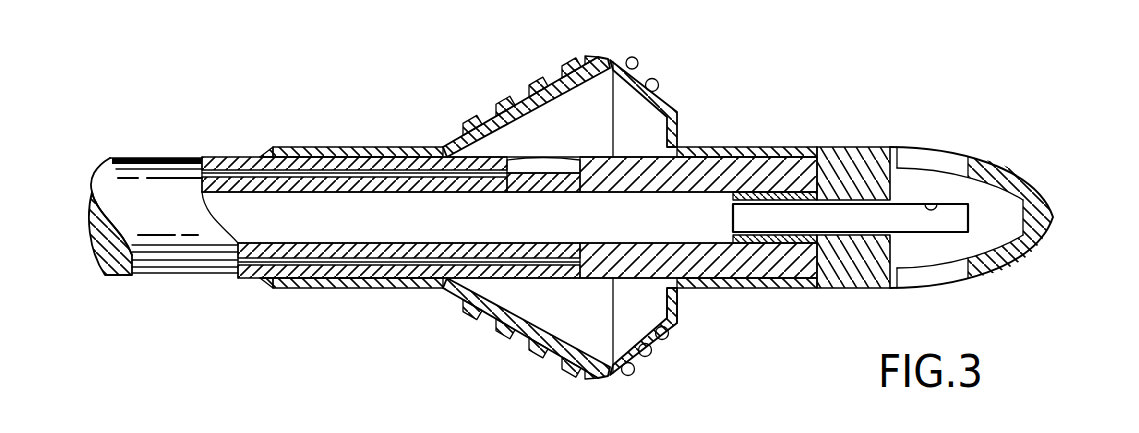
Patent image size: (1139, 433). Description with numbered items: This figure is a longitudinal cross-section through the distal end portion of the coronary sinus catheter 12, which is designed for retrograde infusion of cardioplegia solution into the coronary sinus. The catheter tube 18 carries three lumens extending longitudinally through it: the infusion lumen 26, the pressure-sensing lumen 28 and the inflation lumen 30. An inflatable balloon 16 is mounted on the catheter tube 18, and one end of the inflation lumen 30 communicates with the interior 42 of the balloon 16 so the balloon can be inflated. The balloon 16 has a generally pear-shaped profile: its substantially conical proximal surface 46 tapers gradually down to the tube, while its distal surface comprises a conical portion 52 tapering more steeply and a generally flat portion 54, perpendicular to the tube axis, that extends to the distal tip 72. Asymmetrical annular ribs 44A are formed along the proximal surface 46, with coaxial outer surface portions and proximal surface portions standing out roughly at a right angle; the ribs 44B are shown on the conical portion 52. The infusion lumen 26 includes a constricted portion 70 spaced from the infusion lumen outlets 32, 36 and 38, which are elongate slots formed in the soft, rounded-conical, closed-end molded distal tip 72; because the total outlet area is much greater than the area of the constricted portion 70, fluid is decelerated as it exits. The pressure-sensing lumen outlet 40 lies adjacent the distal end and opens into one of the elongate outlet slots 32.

The coronary sinus catheter 12 is at (729, 86).
The inflatable balloon 16 is at (646, 61).
The catheter tube 18 is at (318, 288).
The infusion lumen 26 is at (297, 192).
The pressure-sensing lumen 28 is at (388, 272).
The inflation lumen 30 is at (373, 192).
The infusion lumen outlet 32 is at (965, 268).
The infusion lumen outlet 36 is at (928, 158).
The infusion lumen outlet 38 is at (937, 205).
The pressure-sensing lumen outlet 40 is at (852, 245).
The interior of the balloon 42 is at (548, 310).
The proximal ribs 44A is at (576, 74).
The rounded bumps 44B is at (632, 60).
The proximal surface 46 is at (497, 318).
The conical portion 52 is at (643, 362).
The flat portion 54 is at (680, 302).
The constricted portion 70 is at (733, 197).
The distal tip 72 is at (1060, 215).